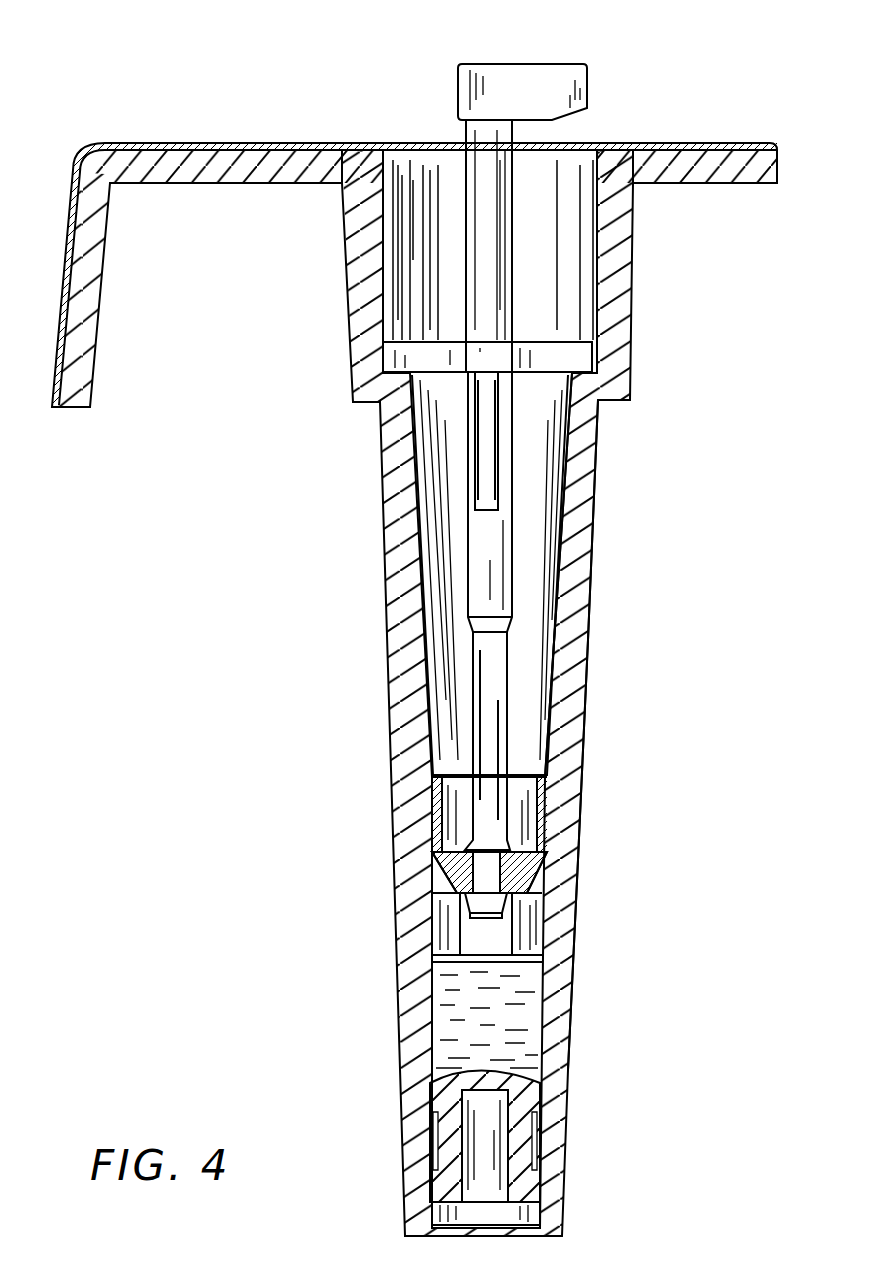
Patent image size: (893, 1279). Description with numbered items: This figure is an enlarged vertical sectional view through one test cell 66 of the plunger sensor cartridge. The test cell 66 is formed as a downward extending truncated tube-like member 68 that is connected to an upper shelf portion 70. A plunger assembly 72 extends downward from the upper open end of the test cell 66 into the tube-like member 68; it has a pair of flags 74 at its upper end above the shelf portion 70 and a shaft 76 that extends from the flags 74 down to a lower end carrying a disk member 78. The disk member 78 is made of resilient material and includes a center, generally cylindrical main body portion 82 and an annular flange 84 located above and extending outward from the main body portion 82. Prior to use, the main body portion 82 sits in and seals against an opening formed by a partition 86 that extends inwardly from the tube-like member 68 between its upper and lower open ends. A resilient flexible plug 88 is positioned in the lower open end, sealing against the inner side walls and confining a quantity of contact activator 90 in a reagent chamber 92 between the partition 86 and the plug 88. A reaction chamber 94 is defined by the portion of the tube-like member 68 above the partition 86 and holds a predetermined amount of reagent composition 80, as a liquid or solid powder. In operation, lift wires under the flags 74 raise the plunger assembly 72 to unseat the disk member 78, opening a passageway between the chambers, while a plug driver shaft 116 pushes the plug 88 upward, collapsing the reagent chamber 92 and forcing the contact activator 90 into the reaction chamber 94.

The test cell 66 is at (602, 450).
The tube-like member 68 is at (583, 500).
The upper shelf portion 70 is at (197, 163).
The plunger assembly 72 is at (465, 577).
The flags 74 is at (538, 88).
The shaft 76 is at (487, 670).
The disk member 78 is at (533, 892).
The reagent composition 80 is at (547, 790).
The main body portion 82 is at (527, 880).
The annular flange 84 is at (550, 862).
The partition 86 is at (438, 877).
The resilient flexible plug 88 is at (517, 1128).
The contact activator 90 is at (507, 1015).
The reagent chamber 92 is at (483, 1020).
The reaction chamber 94 is at (448, 422).
The plug driver shaft 116 is at (483, 1148).